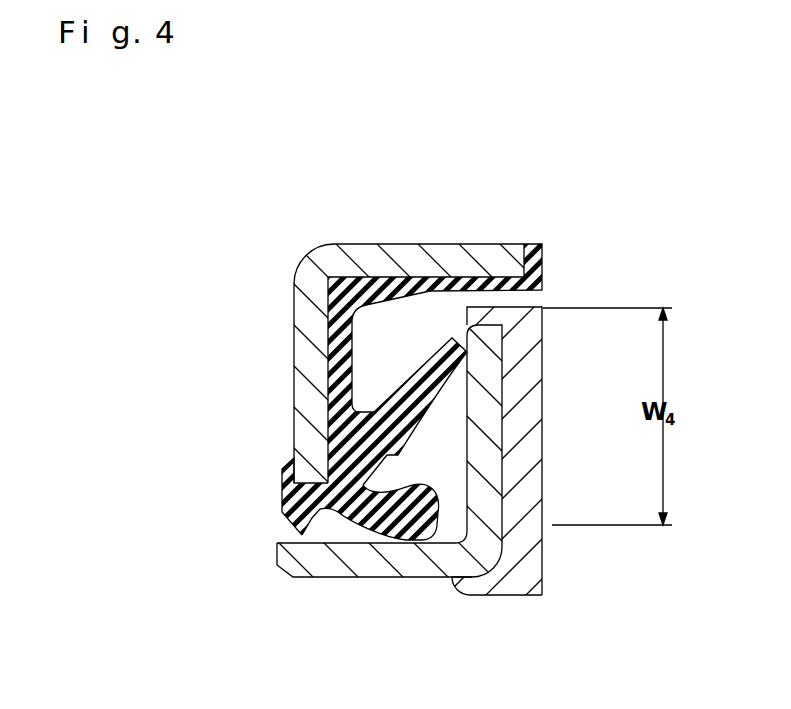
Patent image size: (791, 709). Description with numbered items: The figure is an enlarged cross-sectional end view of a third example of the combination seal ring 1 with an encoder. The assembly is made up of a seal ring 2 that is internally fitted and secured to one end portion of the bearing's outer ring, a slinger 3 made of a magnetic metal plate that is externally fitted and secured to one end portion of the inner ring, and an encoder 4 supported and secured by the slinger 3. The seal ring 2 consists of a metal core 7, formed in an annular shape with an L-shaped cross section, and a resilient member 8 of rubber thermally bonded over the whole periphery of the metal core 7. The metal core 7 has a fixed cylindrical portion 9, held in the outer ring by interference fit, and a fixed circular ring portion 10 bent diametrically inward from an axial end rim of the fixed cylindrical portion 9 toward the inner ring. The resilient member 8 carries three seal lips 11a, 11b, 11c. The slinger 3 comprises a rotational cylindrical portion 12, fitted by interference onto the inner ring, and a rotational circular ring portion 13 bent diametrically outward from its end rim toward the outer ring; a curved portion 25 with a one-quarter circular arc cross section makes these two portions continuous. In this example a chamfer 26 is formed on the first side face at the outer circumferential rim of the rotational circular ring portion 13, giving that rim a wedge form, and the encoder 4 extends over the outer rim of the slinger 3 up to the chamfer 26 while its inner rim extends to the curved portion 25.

The combination seal ring with an encoder 1 is at (557, 252).
The seal ring 2 is at (290, 243).
The slinger 3 is at (417, 570).
The encoder 4 is at (530, 498).
The metal core 7 is at (293, 292).
The resilient member 8 is at (325, 448).
The fixed cylindrical portion 9 is at (372, 256).
The fixed circular ring portion 10 is at (300, 357).
The seal lip 11a is at (283, 530).
The seal lip 11b is at (366, 539).
The seal lip 11c is at (428, 390).
The rotational cylindrical portion 12 is at (332, 568).
The rotational circular ring portion 13 is at (480, 390).
The curved portion 25 is at (507, 570).
The chamfer 26 is at (470, 338).